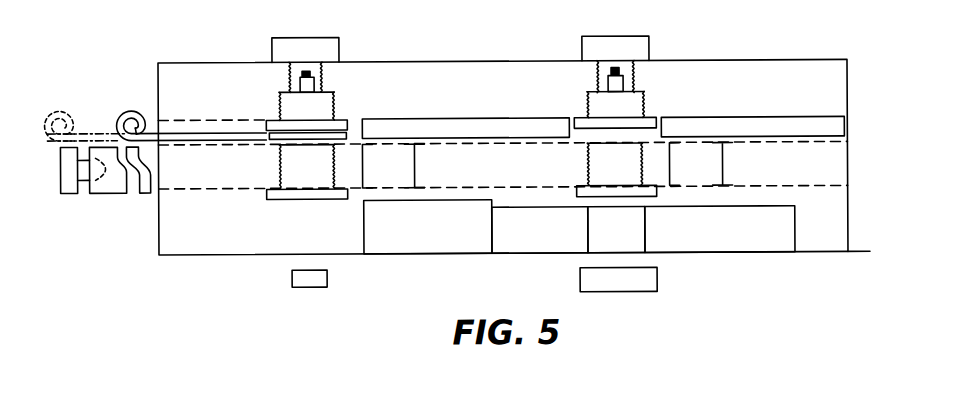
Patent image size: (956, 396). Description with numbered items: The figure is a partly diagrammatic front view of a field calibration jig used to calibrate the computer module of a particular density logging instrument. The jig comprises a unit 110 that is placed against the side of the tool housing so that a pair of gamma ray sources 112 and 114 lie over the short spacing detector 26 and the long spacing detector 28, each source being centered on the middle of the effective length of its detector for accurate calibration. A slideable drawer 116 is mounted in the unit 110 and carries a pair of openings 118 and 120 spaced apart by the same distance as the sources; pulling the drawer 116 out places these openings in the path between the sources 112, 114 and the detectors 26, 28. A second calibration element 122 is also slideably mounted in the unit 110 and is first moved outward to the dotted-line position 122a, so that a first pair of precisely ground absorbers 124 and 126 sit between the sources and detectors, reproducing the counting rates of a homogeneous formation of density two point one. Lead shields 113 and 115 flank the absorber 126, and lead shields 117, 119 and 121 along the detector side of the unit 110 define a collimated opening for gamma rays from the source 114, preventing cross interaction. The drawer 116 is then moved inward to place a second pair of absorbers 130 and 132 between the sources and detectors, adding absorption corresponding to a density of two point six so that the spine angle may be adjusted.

The field calibration unit 110 is at (423, 63).
The gamma ray source 112 is at (312, 76).
The lead shield 113 is at (459, 126).
The gamma ray source 114 is at (621, 75).
The lead shield 115 is at (724, 128).
The slideable drawer 116 is at (151, 190).
The lead shield 117 is at (418, 244).
The opening 118 is at (371, 156).
The lead shield 119 is at (547, 245).
The opening 120 is at (679, 157).
The lead shield 121 is at (710, 246).
The second calibration element 122 is at (146, 133).
The outward position of second calibration element 122a is at (72, 112).
The absorber 124 is at (318, 115).
The absorber 126 is at (627, 111).
The absorber 130 is at (299, 173).
The absorber 132 is at (612, 171).
The short spacing detector 26 is at (312, 288).
The long spacing detector 28 is at (640, 294).